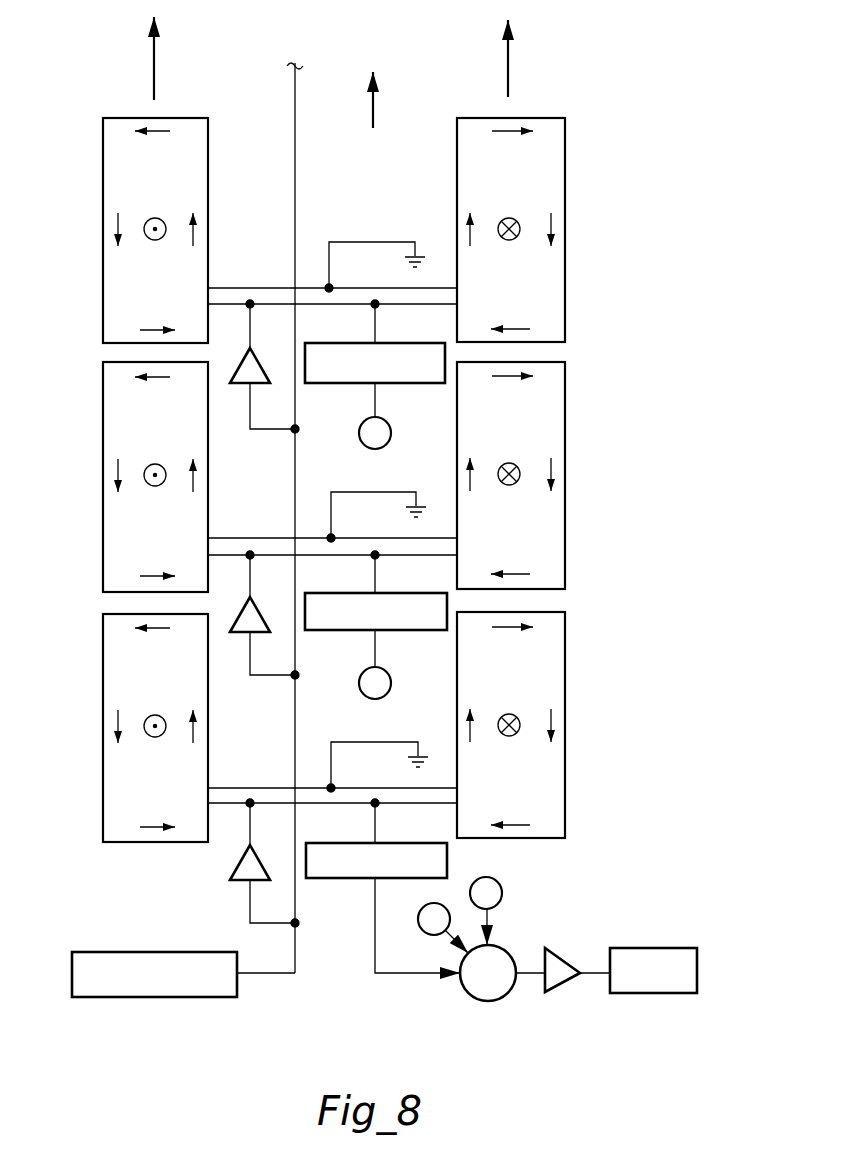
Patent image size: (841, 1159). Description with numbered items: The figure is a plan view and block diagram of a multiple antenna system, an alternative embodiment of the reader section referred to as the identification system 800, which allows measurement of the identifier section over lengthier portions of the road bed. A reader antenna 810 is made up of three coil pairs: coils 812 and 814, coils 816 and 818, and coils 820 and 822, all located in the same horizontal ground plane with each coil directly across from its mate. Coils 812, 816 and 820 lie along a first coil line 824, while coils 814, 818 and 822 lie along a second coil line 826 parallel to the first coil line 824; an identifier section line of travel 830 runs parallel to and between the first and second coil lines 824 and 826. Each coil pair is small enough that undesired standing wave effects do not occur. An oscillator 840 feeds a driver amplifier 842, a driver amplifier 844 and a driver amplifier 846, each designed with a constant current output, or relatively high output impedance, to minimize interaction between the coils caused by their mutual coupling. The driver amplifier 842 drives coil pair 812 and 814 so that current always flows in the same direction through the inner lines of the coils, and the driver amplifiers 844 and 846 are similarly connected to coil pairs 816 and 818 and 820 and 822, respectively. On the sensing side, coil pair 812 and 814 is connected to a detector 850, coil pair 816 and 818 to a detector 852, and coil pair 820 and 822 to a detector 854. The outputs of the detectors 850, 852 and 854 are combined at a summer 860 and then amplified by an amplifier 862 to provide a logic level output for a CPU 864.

The identification system 800 is at (335, 1010).
The reader antenna 810 is at (129, 728).
The coil 812 is at (103, 646).
The coil 814 is at (566, 637).
The coil 816 is at (103, 401).
The coil 818 is at (566, 395).
The coil 820 is at (103, 153).
The coil 822 is at (566, 136).
The first coil line 824 is at (156, 63).
The second coil line 826 is at (510, 63).
The identifier section line of travel 830 is at (375, 112).
The oscillator 840 is at (162, 948).
The driver amplifier 842 is at (232, 874).
The driver amplifier 844 is at (243, 636).
The driver amplifier 846 is at (233, 387).
The detector 850 is at (363, 880).
The detector 852 is at (357, 632).
The detector 854 is at (357, 385).
The summer 860 is at (472, 996).
The amplifier 862 is at (564, 944).
The CPU 864 is at (645, 948).